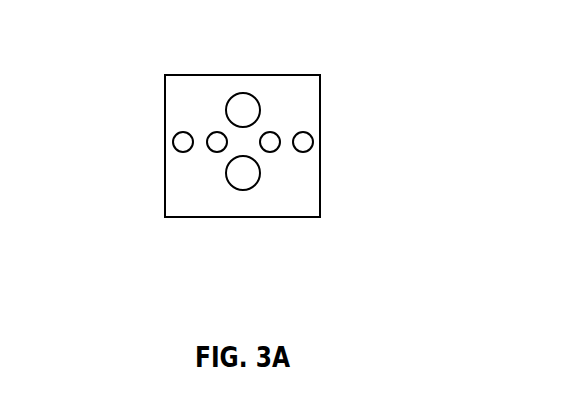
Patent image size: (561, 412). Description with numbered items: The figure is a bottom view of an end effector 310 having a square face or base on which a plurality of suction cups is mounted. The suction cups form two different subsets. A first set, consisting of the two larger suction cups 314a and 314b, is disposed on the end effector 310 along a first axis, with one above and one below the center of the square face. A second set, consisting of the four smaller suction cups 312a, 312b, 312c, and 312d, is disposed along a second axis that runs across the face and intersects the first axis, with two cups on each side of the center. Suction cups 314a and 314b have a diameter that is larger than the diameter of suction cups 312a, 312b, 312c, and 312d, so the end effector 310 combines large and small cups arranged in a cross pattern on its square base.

The end effector 310 is at (323, 75).
The suction cup 312a is at (175, 136).
The suction cup 312b is at (210, 150).
The suction cup 312c is at (277, 149).
The suction cup 312d is at (311, 136).
The suction cup 314a is at (232, 97).
The suction cup 314b is at (250, 188).